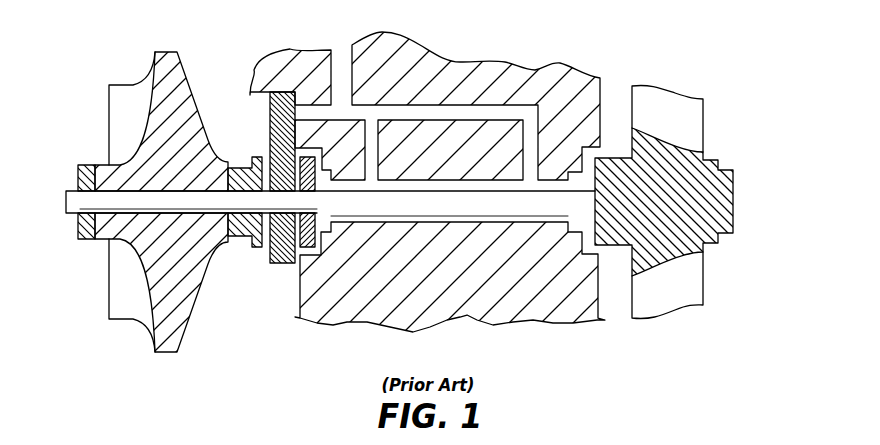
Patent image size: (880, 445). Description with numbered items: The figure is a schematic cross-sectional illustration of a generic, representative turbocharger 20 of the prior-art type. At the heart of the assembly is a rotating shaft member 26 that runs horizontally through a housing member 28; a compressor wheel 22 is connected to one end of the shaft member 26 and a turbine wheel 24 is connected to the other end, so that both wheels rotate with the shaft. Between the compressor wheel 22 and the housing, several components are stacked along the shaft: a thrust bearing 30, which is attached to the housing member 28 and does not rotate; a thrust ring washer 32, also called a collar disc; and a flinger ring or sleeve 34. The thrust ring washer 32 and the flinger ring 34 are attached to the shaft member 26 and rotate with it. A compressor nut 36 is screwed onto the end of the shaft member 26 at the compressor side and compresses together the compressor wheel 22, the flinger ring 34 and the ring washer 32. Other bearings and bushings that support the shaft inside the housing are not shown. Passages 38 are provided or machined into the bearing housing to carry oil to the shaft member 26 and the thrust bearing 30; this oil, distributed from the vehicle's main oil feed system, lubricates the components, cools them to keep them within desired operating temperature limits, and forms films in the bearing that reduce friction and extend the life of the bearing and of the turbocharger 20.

The turbocharger 20 is at (272, 341).
The compressor wheel 22 is at (158, 63).
The turbine wheel 24 is at (708, 203).
The rotating shaft member 26 is at (418, 205).
The housing member 28 is at (453, 320).
The thrust bearing 30 is at (283, 100).
The thrust ring washer 32 is at (301, 162).
The flinger ring 34 is at (246, 170).
The compressor nut 36 is at (88, 171).
The passages 38 is at (518, 110).